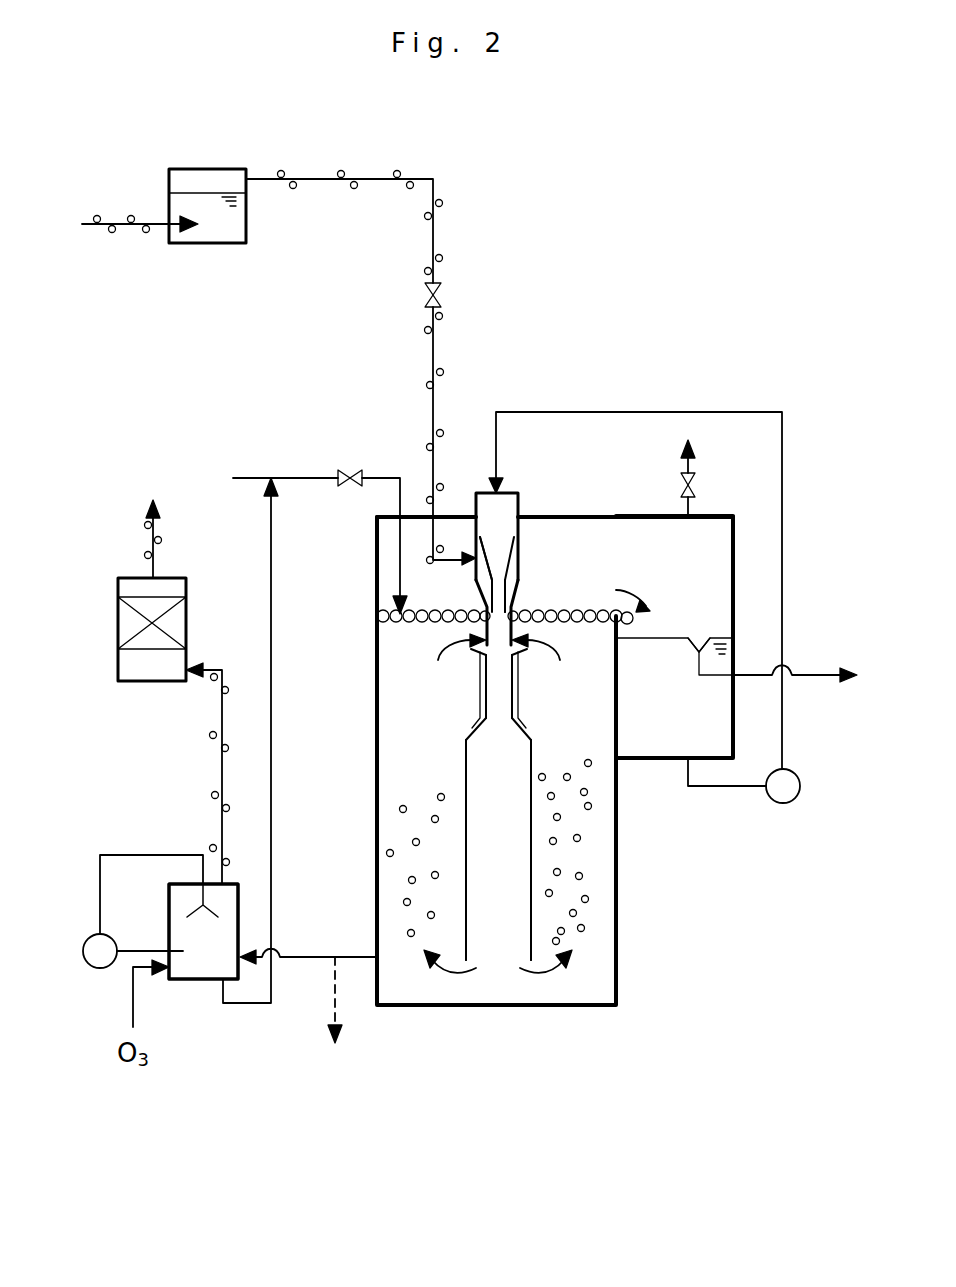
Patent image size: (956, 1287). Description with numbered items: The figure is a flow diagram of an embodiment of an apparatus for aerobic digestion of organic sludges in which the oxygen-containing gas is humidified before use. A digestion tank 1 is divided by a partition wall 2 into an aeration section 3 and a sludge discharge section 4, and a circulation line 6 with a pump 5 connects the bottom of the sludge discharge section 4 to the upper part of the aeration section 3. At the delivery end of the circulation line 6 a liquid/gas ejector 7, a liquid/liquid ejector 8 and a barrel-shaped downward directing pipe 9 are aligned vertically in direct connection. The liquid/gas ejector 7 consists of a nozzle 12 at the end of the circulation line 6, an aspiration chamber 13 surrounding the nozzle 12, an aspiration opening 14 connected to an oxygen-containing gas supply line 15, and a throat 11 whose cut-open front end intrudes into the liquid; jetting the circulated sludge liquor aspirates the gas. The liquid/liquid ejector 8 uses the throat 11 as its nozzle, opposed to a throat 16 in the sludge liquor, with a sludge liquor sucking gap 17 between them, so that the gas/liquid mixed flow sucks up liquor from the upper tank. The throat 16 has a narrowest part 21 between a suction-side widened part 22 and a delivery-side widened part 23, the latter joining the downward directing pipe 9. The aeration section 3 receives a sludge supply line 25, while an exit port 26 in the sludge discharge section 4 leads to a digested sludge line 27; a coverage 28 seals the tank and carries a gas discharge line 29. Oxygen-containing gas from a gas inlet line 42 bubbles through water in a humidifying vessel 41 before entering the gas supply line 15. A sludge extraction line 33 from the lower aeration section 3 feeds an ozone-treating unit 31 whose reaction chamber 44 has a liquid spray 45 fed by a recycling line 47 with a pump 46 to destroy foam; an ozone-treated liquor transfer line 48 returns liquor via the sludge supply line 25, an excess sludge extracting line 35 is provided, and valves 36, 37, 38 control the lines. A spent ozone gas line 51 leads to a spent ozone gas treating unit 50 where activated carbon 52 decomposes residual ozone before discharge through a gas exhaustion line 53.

The digestion tank 1 is at (490, 1007).
The partition wall 2 is at (618, 668).
The aeration section 3 is at (560, 1007).
The sludge discharge section 4 is at (660, 760).
The pump 5 is at (782, 804).
The circulation line 6 is at (722, 410).
The liquid/gas ejector 7 is at (528, 550).
The liquid/liquid ejector 8 is at (470, 675).
The downward directing pipe 9 is at (530, 930).
The throat 11 is at (485, 627).
The nozzle 12 is at (512, 578).
The aspiration chamber 13 is at (484, 584).
The aspiration opening 14 is at (476, 576).
The oxygen-containing gas supply line 15 is at (437, 233).
The throat 16 is at (486, 683).
The sludge liquor sucking gap 17 is at (506, 626).
The narrowest part 21 is at (484, 705).
The widened part 22 is at (512, 660).
The widened part 23 is at (526, 724).
The sludge supply line 25 is at (293, 476).
The exit port 26 is at (700, 640).
The digested sludge line 27 is at (818, 680).
The coverage 28 is at (624, 514).
The gas discharge line 29 is at (690, 466).
The ozone-treating unit 31 is at (178, 982).
The sludge extraction line 33 is at (310, 955).
The excess sludge extracting line 35 is at (338, 1020).
The valve 36 is at (350, 468).
The valve 37 is at (425, 292).
The valve 38 is at (694, 488).
The humidifying vessel 41 is at (207, 167).
The gas inlet line 42 is at (140, 228).
The reaction chamber 44 is at (210, 982).
The liquid spray 45 is at (200, 907).
The pump 46 is at (92, 968).
The recycling line 47 is at (140, 853).
The ozone-treated liquor transfer line 48 is at (273, 805).
The spent ozone gas treating unit 50 is at (133, 683).
The spent ozone gas line 51 is at (220, 757).
The activated carbon 52 is at (173, 622).
The gas exhaustion line 53 is at (150, 550).